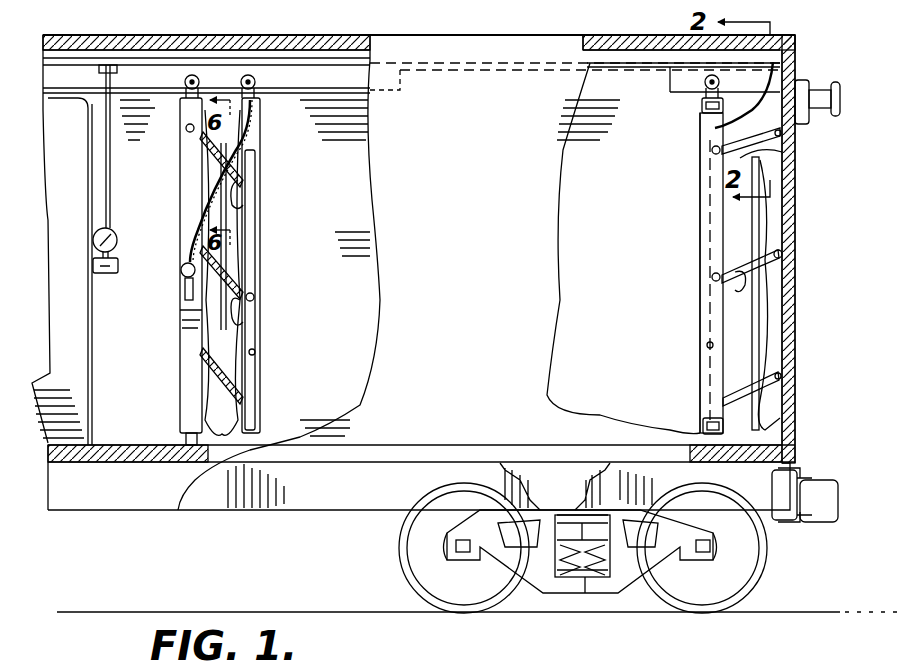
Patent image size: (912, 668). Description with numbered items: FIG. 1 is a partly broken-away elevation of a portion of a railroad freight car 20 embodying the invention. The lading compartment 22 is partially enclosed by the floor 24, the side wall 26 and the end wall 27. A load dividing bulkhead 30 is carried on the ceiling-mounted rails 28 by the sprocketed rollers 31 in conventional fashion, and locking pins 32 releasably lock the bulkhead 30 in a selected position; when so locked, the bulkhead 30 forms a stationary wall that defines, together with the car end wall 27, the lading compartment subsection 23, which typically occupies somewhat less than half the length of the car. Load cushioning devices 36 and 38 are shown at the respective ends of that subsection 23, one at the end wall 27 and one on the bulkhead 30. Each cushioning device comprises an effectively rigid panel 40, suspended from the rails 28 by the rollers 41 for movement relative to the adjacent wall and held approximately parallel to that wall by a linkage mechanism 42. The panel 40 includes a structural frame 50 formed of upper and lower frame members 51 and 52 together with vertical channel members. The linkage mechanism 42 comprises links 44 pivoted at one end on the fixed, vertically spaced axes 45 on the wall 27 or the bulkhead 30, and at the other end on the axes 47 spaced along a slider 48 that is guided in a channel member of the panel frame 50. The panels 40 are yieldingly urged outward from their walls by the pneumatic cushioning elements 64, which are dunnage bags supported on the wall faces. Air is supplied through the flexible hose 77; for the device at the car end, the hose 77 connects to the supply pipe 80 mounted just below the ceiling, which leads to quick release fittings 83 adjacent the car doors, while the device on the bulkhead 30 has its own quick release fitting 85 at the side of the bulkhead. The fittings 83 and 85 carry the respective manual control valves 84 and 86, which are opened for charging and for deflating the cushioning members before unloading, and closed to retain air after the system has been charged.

The railway car 20 is at (568, 32).
The lading compartment 22 is at (148, 434).
The lading compartment subsection 23 is at (620, 292).
The floor 24 is at (448, 447).
The side wall 26 is at (602, 222).
The end wall 27 is at (790, 400).
The ceiling-mounted rails 28 is at (338, 100).
The load dividing bulkhead 30 is at (180, 363).
The sprocketed rollers 31 is at (185, 92).
The locking pins 32 is at (185, 95).
The load cushioning device 36 is at (695, 185).
The load cushioning device 38 is at (295, 215).
The rigid panel 40 is at (265, 408).
The rollers 41 is at (262, 76).
The linkage mechanism 42 is at (786, 290).
The links 44 is at (238, 186).
The fixed axes 45 is at (186, 132).
The axes 47 is at (254, 300).
The slider 48 is at (258, 355).
The structural frame 50 is at (698, 133).
The upper frame member 51 is at (700, 108).
The lower frame member 52 is at (702, 428).
The pneumatic cushioning elements 64 is at (238, 368).
The flexible hose 77 is at (196, 200).
The supply pipe 80 is at (450, 62).
The quick release fittings 83 is at (92, 268).
The manual control valve 84 is at (93, 238).
The air supply quick release fitting 85 is at (188, 302).
The manual control valve 86 is at (181, 280).